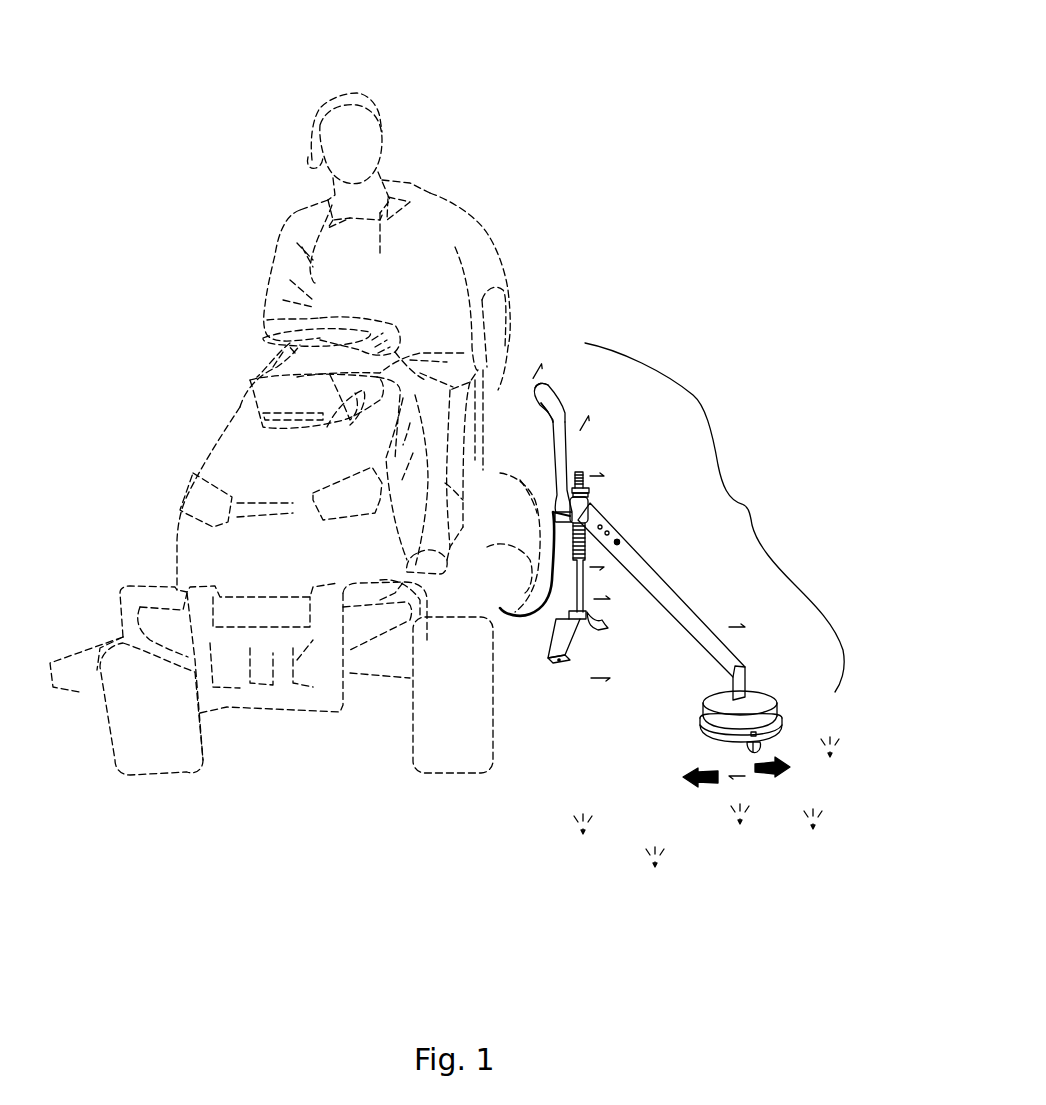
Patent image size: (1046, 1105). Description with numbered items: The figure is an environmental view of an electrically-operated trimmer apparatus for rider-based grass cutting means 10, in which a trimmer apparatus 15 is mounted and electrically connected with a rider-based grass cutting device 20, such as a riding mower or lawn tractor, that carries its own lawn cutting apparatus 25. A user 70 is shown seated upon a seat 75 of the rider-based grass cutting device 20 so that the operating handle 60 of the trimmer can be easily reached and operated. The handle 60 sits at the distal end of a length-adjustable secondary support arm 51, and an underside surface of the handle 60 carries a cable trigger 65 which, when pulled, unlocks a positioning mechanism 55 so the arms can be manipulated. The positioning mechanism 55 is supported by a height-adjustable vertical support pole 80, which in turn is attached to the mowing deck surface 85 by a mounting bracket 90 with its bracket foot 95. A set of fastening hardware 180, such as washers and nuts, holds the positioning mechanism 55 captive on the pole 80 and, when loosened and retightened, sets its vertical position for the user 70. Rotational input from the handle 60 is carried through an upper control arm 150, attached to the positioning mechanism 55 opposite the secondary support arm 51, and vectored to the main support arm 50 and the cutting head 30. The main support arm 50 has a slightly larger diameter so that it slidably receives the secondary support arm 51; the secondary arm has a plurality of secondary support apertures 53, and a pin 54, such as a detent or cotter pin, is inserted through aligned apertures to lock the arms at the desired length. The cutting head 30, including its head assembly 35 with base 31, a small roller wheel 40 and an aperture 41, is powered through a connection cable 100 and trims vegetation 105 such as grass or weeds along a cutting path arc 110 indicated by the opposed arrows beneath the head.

The electrically-operated trimmer apparatus for rider-based grass cutting means 10 is at (707, 108).
The trimmer apparatus 15 is at (714, 517).
The rider-based grass cutting device 20 is at (215, 470).
The lawn cutting apparatus 25 is at (517, 680).
The cutting head 30 is at (750, 705).
The trimmer head base 31 is at (700, 728).
The trimmer head assembly 35 is at (692, 707).
The roller wheel 40 is at (750, 745).
The aperture 41 is at (757, 735).
The main support arm 50 is at (685, 613).
The secondary support arm 51 is at (618, 541).
The secondary support apertures 53 is at (606, 524).
The pin 54 is at (620, 543).
The positioning mechanism 55 is at (590, 505).
The operating handle 60 is at (545, 387).
The cable trigger 65 is at (548, 412).
The user 70 is at (295, 227).
The seat 75 is at (490, 470).
The vertical support pole 80 is at (572, 485).
The mowing deck surface 85 is at (513, 638).
The mounting bracket 90 is at (567, 642).
The bracket foot 95 is at (560, 657).
The connection cable 100 is at (553, 510).
The vegetation 105 is at (580, 832).
The cutting path arc 110 is at (705, 783).
The upper control arm 150 is at (563, 448).
The fastening hardware 180 is at (588, 500).